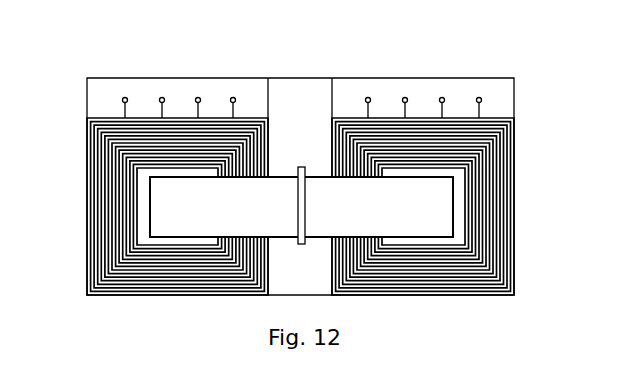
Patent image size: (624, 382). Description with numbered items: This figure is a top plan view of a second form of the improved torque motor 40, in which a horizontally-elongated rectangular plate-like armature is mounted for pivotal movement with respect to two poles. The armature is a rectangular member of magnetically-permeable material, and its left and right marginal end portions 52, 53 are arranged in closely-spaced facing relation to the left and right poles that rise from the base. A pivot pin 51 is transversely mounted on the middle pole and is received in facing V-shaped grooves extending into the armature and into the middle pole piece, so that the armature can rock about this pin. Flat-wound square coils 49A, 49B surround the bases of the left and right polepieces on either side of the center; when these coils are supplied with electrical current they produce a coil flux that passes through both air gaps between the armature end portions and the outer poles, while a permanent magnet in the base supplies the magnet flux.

The torque motor 40 is at (520, 63).
The flat-wound square coil 49A is at (92, 185).
The flat-wound square coil 49B is at (511, 185).
The pivot pin 51 is at (305, 166).
The left marginal end portion of the armature 52 is at (266, 216).
The right marginal end portion of the armature 53 is at (377, 207).